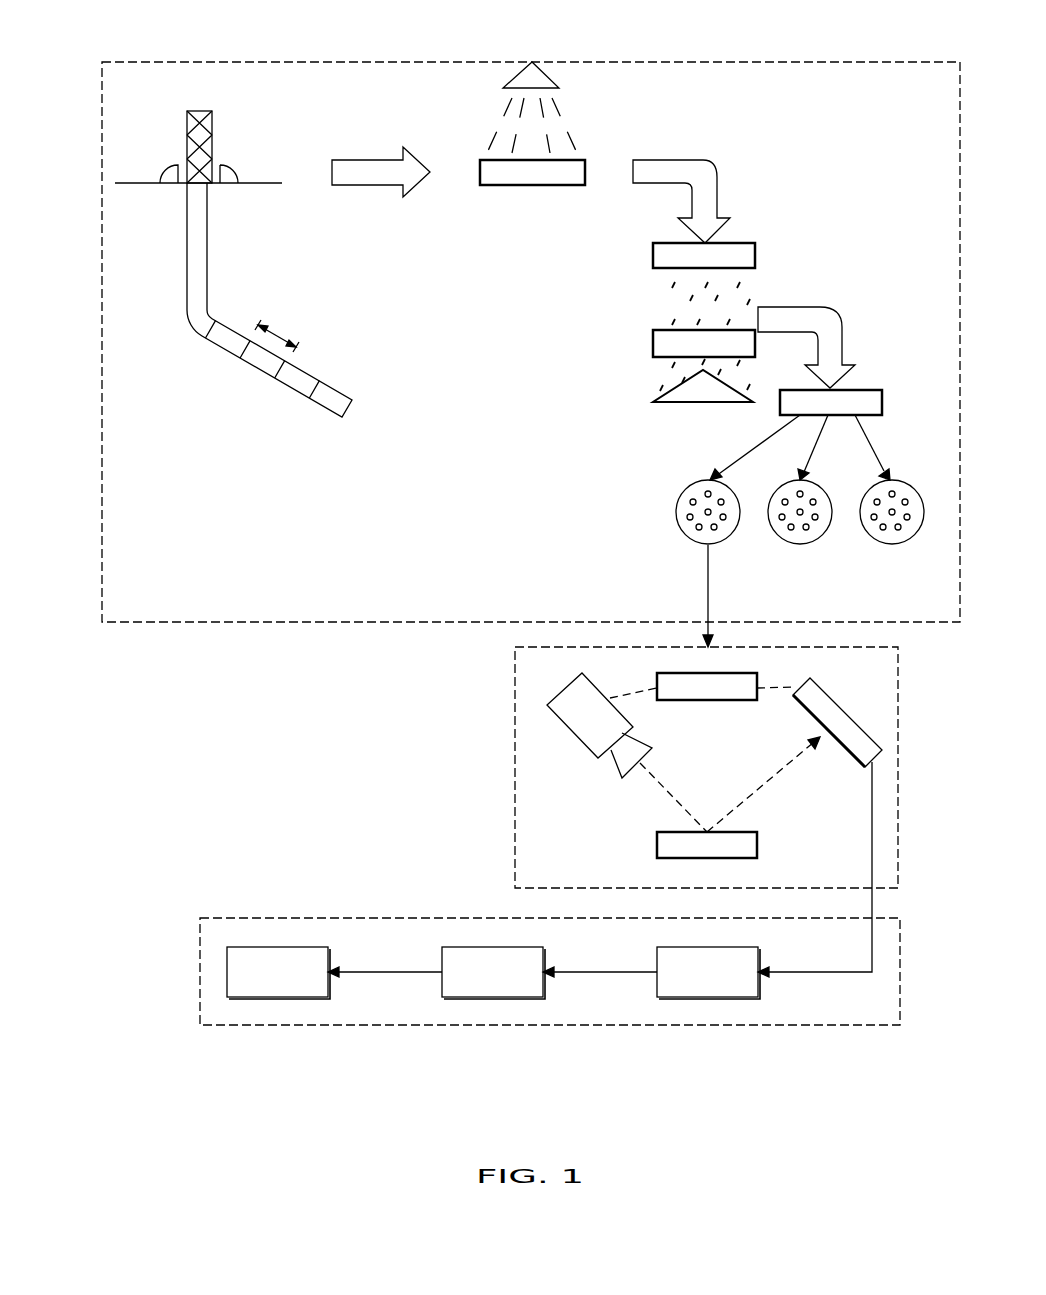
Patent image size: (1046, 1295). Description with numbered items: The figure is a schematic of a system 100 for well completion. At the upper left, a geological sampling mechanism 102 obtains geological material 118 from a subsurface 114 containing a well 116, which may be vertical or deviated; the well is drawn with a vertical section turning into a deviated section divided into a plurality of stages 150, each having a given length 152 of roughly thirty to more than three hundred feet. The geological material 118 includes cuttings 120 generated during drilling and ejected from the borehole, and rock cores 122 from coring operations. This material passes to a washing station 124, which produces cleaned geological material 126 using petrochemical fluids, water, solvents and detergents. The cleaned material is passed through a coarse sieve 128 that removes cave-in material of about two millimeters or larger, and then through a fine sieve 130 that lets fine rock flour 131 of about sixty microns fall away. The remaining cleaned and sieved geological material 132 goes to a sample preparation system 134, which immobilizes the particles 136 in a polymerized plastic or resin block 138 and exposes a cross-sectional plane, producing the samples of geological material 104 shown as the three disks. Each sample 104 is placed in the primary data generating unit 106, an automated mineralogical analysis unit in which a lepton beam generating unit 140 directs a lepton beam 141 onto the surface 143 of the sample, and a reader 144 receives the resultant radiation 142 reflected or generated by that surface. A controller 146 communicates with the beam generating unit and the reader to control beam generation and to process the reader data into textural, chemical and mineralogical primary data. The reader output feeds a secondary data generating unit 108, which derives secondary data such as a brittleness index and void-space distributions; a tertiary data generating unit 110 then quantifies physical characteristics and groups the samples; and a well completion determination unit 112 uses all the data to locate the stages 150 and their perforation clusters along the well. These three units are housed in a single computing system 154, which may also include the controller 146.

The system for well completion 100 is at (513, 24).
The geological sampling mechanism 102 is at (102, 340).
The sample of geological material 104 is at (690, 538).
The primary data generating unit 106 is at (515, 768).
The secondary data generating unit 108 is at (737, 998).
The tertiary data generating unit 110 is at (522, 998).
The well completion determination unit 112 is at (310, 998).
The subsurface 114 is at (155, 228).
The well 116 is at (230, 300).
The geological material 118 is at (385, 159).
The cuttings 120 is at (165, 167).
The rock cores 122 is at (203, 250).
The washing station 124 is at (512, 186).
The cleaned geological material 126 is at (683, 159).
The coarse sieve 128 is at (745, 242).
The fine sieve 130 is at (653, 343).
The fine rock flour 131 is at (660, 402).
The cleaned and sieved geological material 132 is at (808, 307).
The sample preparation system 134 is at (875, 390).
The particles 136 is at (691, 499).
The polymerized plastic or resin block 138 is at (798, 496).
The lepton beam generating unit 140 is at (560, 693).
The lepton beam 141 is at (667, 793).
The resultant radiation 142 is at (763, 787).
The surface 143 is at (745, 832).
The reader 144 is at (847, 712).
The controller 146 is at (727, 700).
The stages 150 is at (219, 348).
The given length 152 is at (280, 333).
The computing system 154 is at (240, 918).